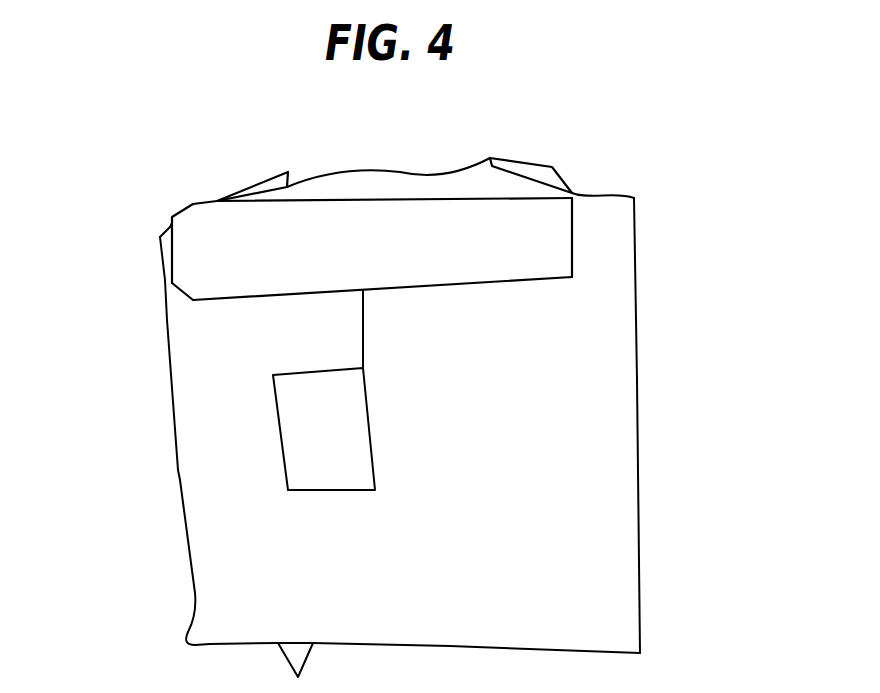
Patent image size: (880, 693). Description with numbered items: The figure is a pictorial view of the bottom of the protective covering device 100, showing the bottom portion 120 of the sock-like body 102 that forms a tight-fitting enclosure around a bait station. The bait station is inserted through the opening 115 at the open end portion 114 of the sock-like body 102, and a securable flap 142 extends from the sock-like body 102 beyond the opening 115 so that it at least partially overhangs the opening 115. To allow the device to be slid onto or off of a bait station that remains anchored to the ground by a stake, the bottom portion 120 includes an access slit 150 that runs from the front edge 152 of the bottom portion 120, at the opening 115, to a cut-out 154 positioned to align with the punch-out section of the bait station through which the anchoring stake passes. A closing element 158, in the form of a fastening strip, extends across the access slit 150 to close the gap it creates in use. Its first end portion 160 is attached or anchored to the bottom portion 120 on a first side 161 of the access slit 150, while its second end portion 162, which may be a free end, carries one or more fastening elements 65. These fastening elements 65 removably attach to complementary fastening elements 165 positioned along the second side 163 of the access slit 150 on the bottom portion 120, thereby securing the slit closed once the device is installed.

The device 100 is at (678, 193).
The sock-like body 102 is at (658, 431).
The open end portion 114 is at (133, 257).
The opening 115 is at (446, 170).
The bottom portion 120 is at (193, 502).
The securable flap 142 is at (278, 178).
The access slit 150 is at (363, 337).
The front edge 152 is at (360, 180).
The cut-out 154 is at (275, 420).
The closing element 158 is at (487, 197).
The first end portion 160 is at (552, 230).
The first side 161 is at (430, 317).
The second end portion 162 is at (192, 228).
The second side 163 is at (302, 315).
The complementary fastening elements 165 is at (168, 227).
The fastening elements 65 is at (173, 287).